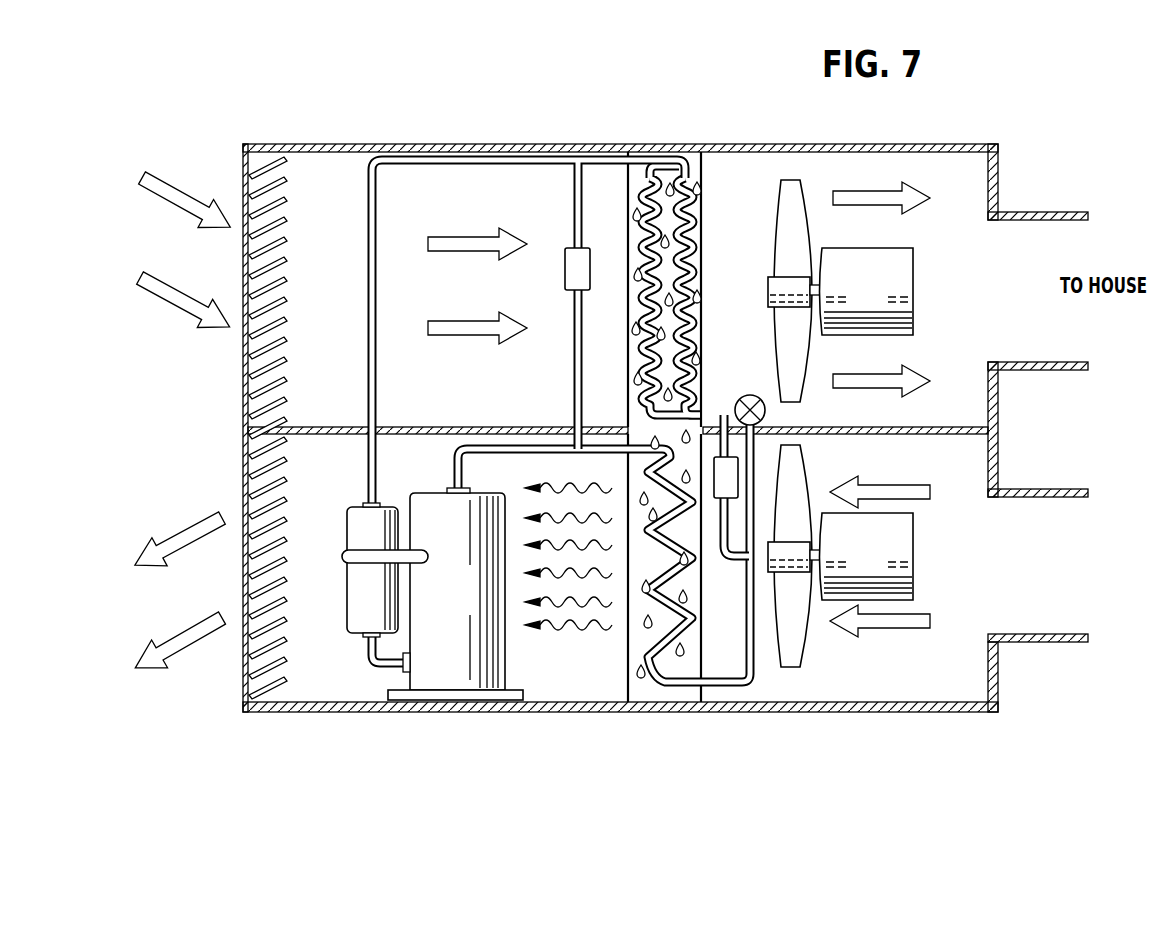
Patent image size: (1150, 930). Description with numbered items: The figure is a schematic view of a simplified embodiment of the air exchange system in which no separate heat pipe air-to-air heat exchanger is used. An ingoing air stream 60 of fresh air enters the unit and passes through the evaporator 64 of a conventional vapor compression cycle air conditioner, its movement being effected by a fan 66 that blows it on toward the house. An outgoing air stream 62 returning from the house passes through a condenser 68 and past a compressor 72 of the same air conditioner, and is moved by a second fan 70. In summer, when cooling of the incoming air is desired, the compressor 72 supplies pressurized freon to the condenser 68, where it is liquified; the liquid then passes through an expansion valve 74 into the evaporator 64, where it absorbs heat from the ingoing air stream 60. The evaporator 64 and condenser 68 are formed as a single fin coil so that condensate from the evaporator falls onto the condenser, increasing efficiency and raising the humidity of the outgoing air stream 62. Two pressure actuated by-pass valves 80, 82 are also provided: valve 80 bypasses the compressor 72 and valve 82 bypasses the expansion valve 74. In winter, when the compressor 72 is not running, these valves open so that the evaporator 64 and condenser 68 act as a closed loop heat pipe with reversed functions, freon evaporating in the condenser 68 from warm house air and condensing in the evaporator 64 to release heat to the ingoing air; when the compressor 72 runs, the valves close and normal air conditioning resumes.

The ingoing air stream 60 is at (116, 226).
The outgoing air stream 62 is at (1025, 571).
The evaporator 64 is at (700, 213).
The fan 66 is at (882, 303).
The condenser 68 is at (670, 686).
The fan 70 is at (882, 561).
The compressor 72 is at (472, 604).
The expansion valve 74 is at (750, 396).
The by-pass valve 80 is at (566, 268).
The by-pass valve 82 is at (730, 475).